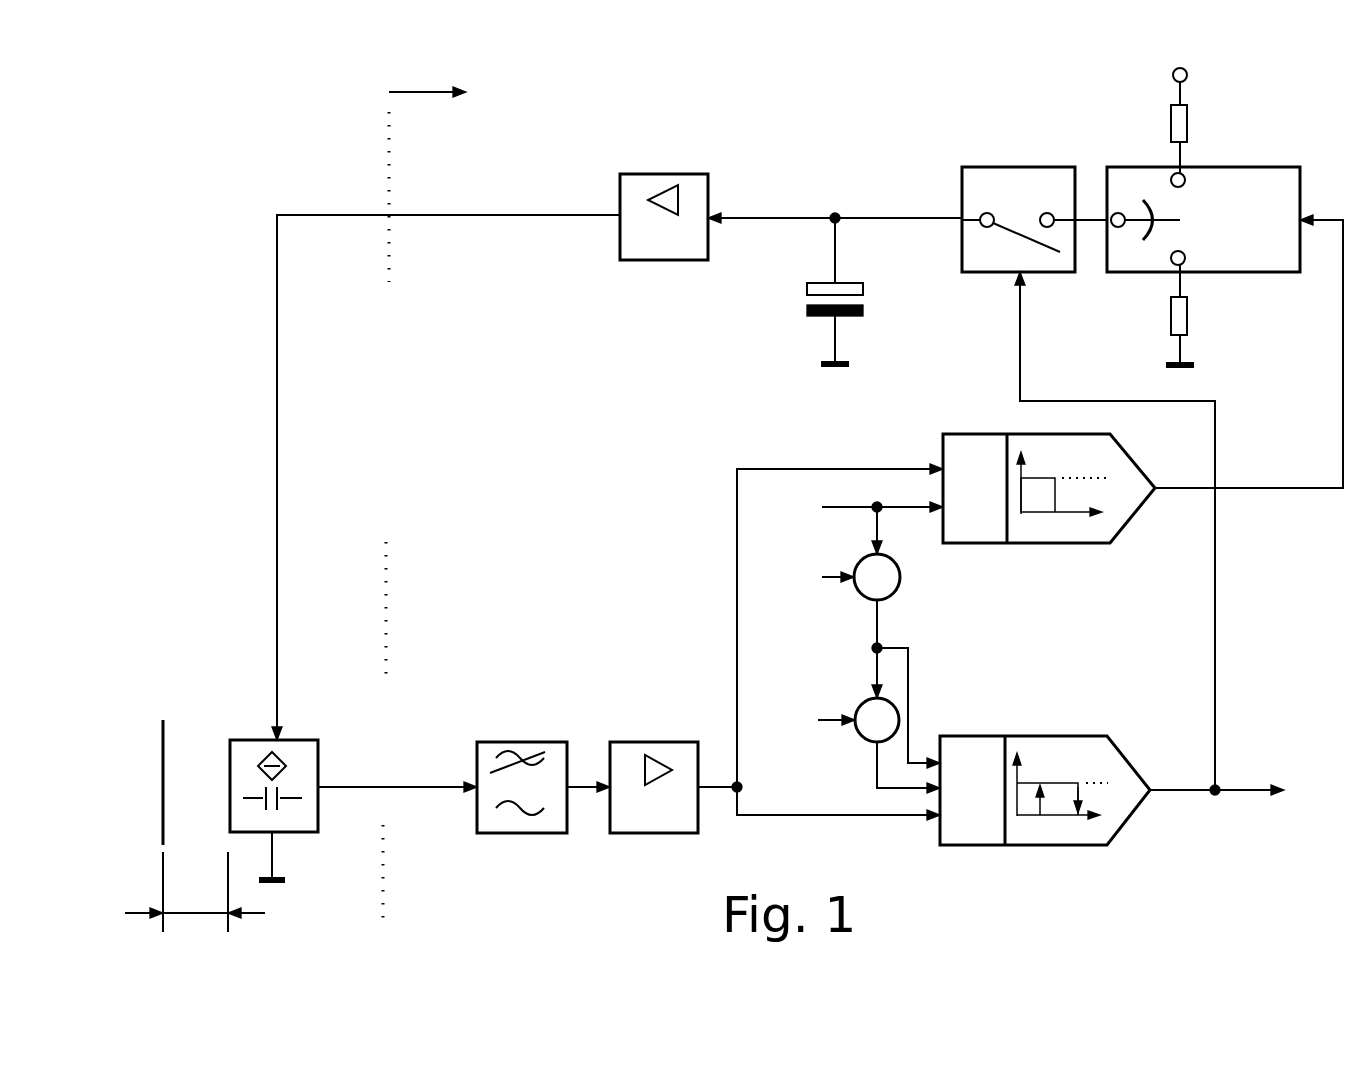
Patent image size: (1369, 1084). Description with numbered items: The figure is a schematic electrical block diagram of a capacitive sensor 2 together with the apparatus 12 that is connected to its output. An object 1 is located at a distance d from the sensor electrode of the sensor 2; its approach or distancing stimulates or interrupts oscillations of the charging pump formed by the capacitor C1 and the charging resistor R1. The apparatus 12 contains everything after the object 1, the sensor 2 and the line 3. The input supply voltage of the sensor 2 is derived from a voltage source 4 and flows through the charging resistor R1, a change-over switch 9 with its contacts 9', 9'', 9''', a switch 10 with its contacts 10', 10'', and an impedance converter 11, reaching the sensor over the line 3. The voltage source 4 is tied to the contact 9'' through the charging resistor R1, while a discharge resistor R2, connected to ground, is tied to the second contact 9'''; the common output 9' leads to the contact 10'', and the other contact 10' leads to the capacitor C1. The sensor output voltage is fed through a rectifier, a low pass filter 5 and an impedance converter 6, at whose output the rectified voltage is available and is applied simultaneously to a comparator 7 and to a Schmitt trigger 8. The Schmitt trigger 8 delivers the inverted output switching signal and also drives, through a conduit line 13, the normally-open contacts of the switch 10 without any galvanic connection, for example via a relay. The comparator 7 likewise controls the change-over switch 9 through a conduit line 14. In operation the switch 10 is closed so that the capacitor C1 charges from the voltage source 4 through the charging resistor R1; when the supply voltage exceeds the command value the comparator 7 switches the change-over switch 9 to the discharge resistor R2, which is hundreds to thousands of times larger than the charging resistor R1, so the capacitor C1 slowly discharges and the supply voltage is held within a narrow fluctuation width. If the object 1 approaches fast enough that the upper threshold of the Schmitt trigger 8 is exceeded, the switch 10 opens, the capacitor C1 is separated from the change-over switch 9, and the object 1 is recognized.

The object 1 is at (163, 760).
The capacitive sensor 2 is at (318, 750).
The line 3 is at (320, 216).
The voltage source 4 is at (1172, 75).
The low pass filter 5 is at (489, 749).
The impedance converter 6 is at (623, 749).
The comparator 7 is at (1015, 543).
The Schmitt trigger 8 is at (1076, 745).
The change-over switch 9 is at (1175, 252).
The common output 9' is at (1095, 158).
The contact 9'' is at (1147, 138).
The second contact 9''' is at (1142, 294).
The switch 10 is at (998, 215).
The switch contact 10' is at (950, 275).
The switch contact 10'' is at (1037, 158).
The impedance converter 11 is at (635, 258).
The apparatus 12 is at (446, 501).
The conduit line 13 is at (1215, 660).
The conduit line 14 is at (1343, 385).
The capacitor C1 is at (807, 288).
The charging resistor R1 is at (1186, 142).
The discharge resistor R2 is at (1186, 333).